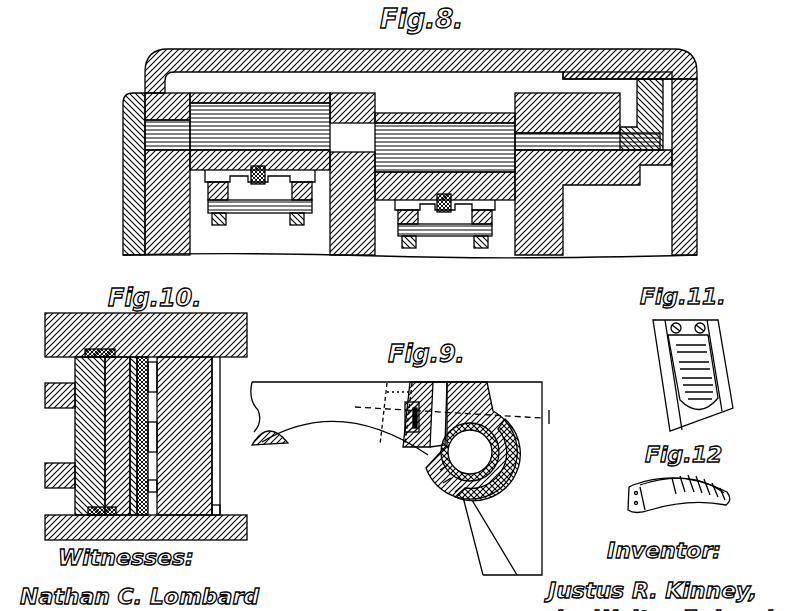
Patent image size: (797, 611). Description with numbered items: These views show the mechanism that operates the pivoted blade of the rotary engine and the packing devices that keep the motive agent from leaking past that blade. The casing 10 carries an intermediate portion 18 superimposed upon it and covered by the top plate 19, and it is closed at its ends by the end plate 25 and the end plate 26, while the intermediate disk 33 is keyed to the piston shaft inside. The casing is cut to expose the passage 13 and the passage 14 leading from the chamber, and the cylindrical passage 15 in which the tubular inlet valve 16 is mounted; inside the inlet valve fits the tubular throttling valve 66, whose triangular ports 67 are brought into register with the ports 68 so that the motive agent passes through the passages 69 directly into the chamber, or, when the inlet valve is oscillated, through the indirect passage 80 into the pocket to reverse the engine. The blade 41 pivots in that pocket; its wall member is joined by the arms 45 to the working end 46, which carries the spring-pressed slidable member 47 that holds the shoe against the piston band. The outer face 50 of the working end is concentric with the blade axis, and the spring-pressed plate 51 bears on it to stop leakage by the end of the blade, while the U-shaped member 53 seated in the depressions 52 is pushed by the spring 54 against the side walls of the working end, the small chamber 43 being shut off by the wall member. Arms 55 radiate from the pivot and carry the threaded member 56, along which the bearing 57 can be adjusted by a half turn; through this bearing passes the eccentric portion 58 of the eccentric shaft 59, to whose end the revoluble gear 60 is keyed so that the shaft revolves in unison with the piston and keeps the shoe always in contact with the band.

In FIG. 8, the casing 10 is at (545, 255).
In FIG. 10, the casing 10 is at (214, 385).
In FIG. 9, the casing 10 is at (230, 377).
In FIG. 9, the passage 13 is at (333, 420).
In FIG. 9, the passage 14 is at (470, 540).
In FIG. 9, the cylindrical passage 15 is at (500, 450).
In FIG. 9, the tubular inlet valve 16 is at (482, 440).
In FIG. 8, the intermediate portion of casing 18 is at (540, 95).
In FIG. 8, the top plate 19 is at (162, 69).
In FIG. 8, the end plate 25 is at (124, 205).
In FIG. 8, the end plate 26 is at (697, 182).
In FIG. 10, the intermediate disk 33 is at (60, 525).
In FIG. 10, the pivoted blade 41 is at (77, 435).
In FIG. 8, the small chamber 43 is at (445, 80).
In FIG. 10, the arms 45 is at (46, 396).
In FIG. 10, the working end of blade 46 is at (200, 358).
In FIG. 10, the slidable member 47 is at (90, 495).
In FIG. 10, the outer face 50 is at (222, 513).
In FIG. 10, the spring-pressed plate 51 is at (158, 492).
In FIG. 9, the spring-pressed plate 51 is at (405, 422).
In FIG. 10, the depressions 52 is at (96, 349).
In FIG. 10, the U-shaped member 53 is at (155, 320).
In FIG. 9, the U-shaped member 53 is at (400, 384).
In FIG. 11, the U-shaped member 53 is at (668, 360).
In FIG. 11, the spring 54 is at (700, 356).
In FIG. 12, the spring 54 is at (726, 494).
In FIG. 8, the arms 55 is at (222, 225).
In FIG. 8, the threaded member 56 is at (262, 213).
In FIG. 8, the bearing 57 is at (455, 112).
In FIG. 8, the eccentric portion 58 is at (222, 112).
In FIG. 8, the eccentric shaft 59 is at (160, 135).
In FIG. 8, the revoluble gear 60 is at (655, 105).
In FIG. 9, the tubular throttling valve 66 is at (520, 478).
In FIG. 9, the triangular ports 67 is at (458, 493).
In FIG. 9, the ports 68 is at (445, 483).
In FIG. 9, the passages 69 is at (442, 471).
In FIG. 10, the indirect passage 80 is at (152, 452).
In FIG. 9, the indirect passage 80 is at (440, 395).